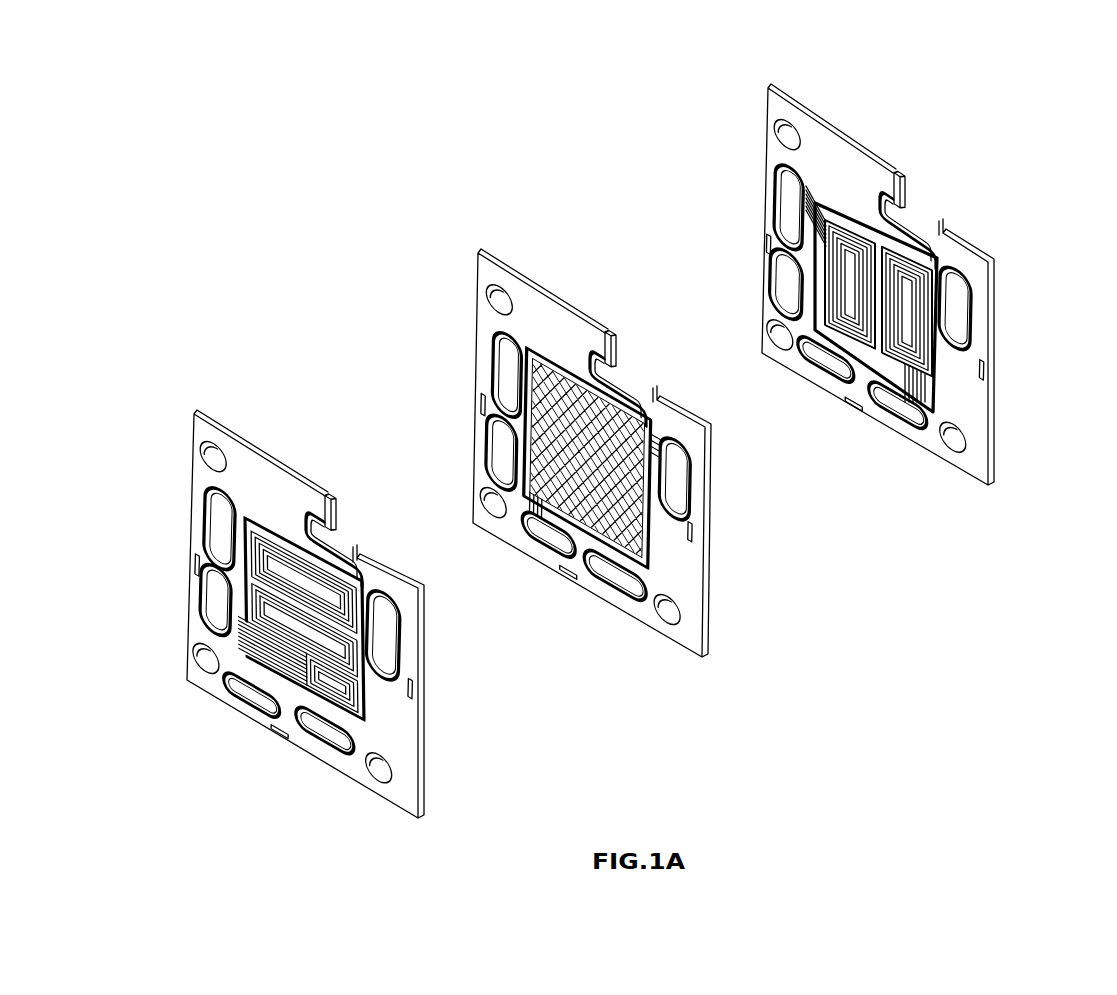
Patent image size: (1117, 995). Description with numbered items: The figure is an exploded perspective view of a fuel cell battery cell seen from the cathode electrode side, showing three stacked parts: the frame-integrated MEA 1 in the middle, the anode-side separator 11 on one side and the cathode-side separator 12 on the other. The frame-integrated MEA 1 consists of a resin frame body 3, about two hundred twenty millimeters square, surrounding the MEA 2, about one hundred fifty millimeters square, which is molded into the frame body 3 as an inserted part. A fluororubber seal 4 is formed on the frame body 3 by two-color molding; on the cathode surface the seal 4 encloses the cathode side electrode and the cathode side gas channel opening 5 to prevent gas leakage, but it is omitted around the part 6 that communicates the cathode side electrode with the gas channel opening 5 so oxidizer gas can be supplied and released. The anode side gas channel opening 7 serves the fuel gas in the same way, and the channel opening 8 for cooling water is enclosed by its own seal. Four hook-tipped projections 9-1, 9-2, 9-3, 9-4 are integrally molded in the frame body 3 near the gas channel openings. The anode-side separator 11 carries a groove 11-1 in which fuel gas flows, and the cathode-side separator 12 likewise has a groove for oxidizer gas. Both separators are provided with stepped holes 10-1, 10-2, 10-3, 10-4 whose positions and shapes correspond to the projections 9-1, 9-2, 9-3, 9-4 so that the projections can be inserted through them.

The frame-integrated MEA 1 is at (585, 408).
The MEA 2 is at (548, 358).
The frame body 3 is at (688, 575).
The seal 4 is at (697, 502).
The cathode side gas channel opening 5 is at (685, 450).
The part communicating the cathode side electrode and gas channel opening 6 is at (670, 448).
The anode side gas channel opening 7 is at (505, 350).
The channel opening for cooling water 8 is at (617, 372).
The projection 9-1 is at (619, 336).
The projection 9-2 is at (486, 403).
The projection 9-3 is at (565, 580).
The projection 9-4 is at (700, 530).
The stepped hole 10-1 is at (334, 497).
The stepped hole 10-2 is at (198, 565).
The stepped hole 10-3 is at (282, 735).
The stepped hole 10-4 is at (418, 690).
The anode-side separator 11 is at (768, 86).
The groove 11-1 is at (940, 262).
The cathode-side separator 12 is at (194, 410).